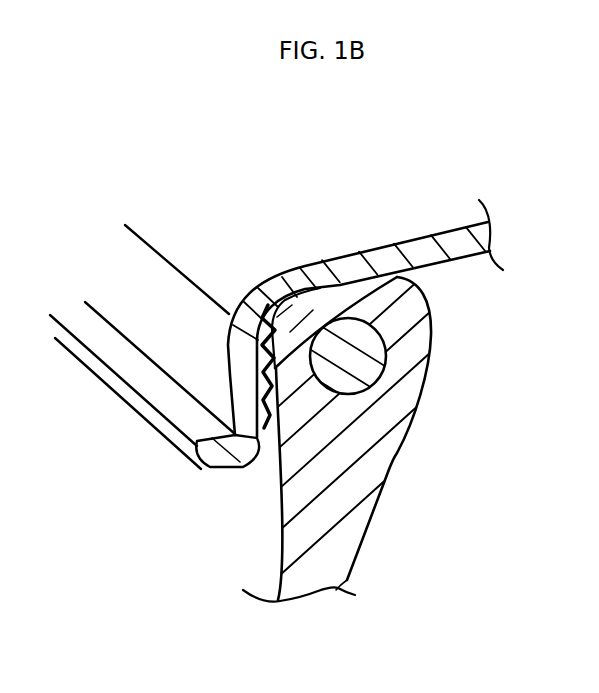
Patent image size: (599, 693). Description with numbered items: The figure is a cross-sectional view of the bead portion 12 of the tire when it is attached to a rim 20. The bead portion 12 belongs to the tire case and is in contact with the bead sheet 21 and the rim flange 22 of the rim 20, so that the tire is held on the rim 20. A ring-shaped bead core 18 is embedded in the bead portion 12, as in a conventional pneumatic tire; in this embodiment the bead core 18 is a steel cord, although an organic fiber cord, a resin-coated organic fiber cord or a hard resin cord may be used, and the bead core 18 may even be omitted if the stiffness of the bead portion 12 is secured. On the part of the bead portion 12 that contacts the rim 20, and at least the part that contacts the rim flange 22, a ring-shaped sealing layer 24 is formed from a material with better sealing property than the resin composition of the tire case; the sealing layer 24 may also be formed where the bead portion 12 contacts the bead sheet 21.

The bead portion 12 is at (410, 423).
The bead core 18 is at (376, 365).
The rim 20 is at (353, 242).
The bead sheet 21 is at (320, 295).
The rim flange 22 is at (233, 372).
The sealing layer 24 is at (262, 290).